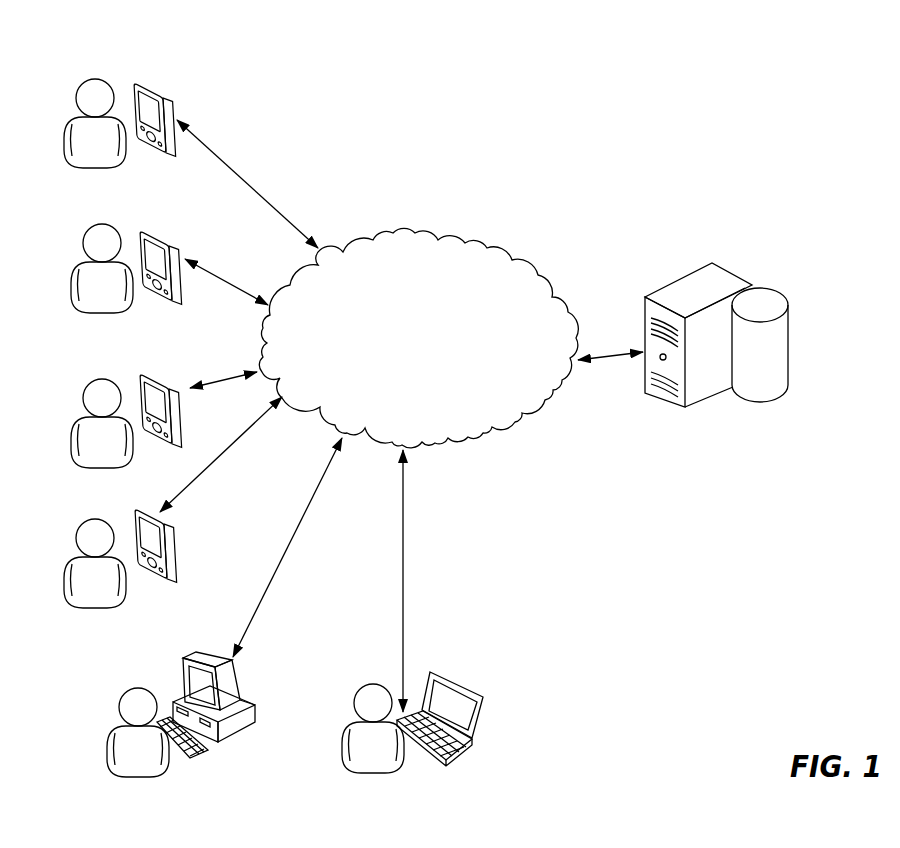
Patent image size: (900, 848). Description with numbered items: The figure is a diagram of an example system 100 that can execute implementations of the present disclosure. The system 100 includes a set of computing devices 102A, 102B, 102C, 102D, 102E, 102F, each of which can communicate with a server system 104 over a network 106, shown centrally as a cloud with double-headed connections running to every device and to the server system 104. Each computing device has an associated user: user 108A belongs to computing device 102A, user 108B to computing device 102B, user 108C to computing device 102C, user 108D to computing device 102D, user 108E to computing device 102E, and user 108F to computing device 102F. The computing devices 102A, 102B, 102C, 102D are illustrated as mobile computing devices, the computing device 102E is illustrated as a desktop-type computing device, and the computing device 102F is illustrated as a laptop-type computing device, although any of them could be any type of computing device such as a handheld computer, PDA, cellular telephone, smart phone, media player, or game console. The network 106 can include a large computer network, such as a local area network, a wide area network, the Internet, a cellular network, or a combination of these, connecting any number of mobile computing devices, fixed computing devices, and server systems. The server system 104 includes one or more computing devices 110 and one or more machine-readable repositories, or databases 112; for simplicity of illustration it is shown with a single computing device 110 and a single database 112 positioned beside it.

The system 100 is at (584, 62).
The computing device 102A is at (164, 86).
The computing device 102B is at (165, 236).
The computing device 102C is at (163, 378).
The computing device 102D is at (177, 552).
The computing device 102E is at (252, 700).
The computing device 102F is at (485, 703).
The server system 104 is at (730, 356).
The network 106 is at (395, 240).
The user 108A is at (90, 168).
The user 108B is at (98, 313).
The user 108C is at (96, 468).
The user 108D is at (88, 608).
The user 108E is at (125, 778).
The user 108F is at (360, 775).
The computing device 110 is at (731, 272).
The database 112 is at (790, 302).